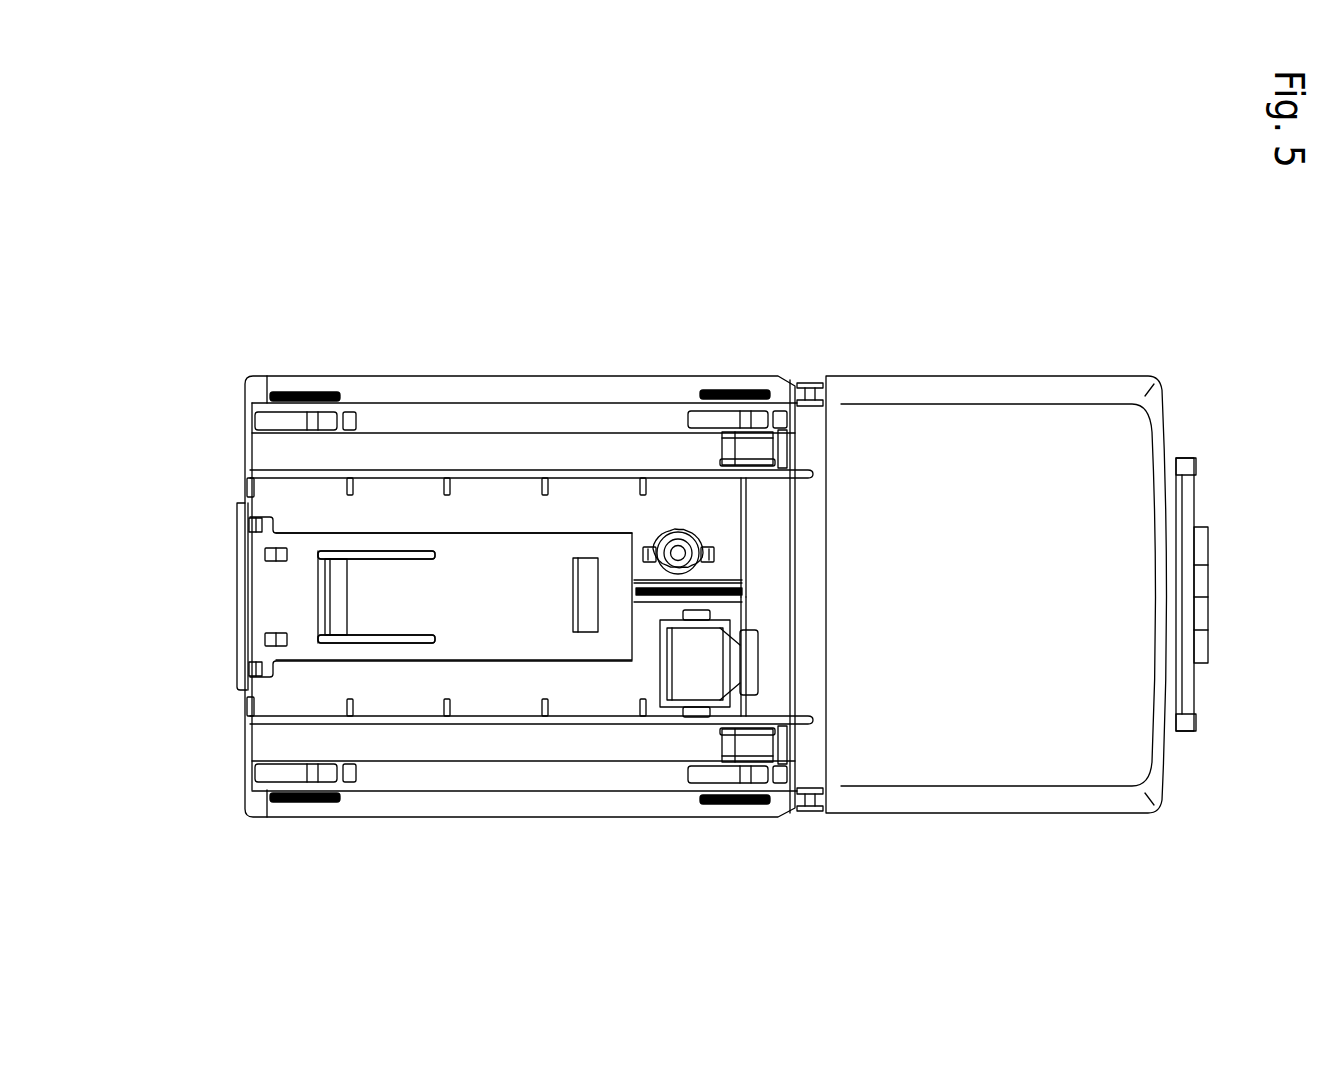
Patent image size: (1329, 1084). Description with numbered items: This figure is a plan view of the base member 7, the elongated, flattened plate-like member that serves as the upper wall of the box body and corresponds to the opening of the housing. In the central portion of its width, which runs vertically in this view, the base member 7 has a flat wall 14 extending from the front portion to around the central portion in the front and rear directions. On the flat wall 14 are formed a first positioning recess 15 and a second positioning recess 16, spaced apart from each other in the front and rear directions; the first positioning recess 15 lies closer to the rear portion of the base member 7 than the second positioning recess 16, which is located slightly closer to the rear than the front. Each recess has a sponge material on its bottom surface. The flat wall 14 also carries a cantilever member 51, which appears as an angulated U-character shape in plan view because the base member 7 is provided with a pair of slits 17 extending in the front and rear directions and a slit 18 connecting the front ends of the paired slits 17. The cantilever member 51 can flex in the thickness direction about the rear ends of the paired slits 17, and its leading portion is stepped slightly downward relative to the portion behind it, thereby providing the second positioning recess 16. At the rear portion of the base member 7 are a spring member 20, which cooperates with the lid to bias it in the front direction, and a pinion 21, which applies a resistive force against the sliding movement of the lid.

The base member 7 is at (995, 275).
The flat wall 14 is at (492, 600).
The first positioning recess 15 is at (585, 603).
The second positioning recess 16 is at (335, 607).
The slits 17 is at (400, 553).
The slit 18 is at (320, 597).
The spring member 20 is at (682, 672).
The pinion 21 is at (673, 525).
The cantilever member 51 is at (376, 595).